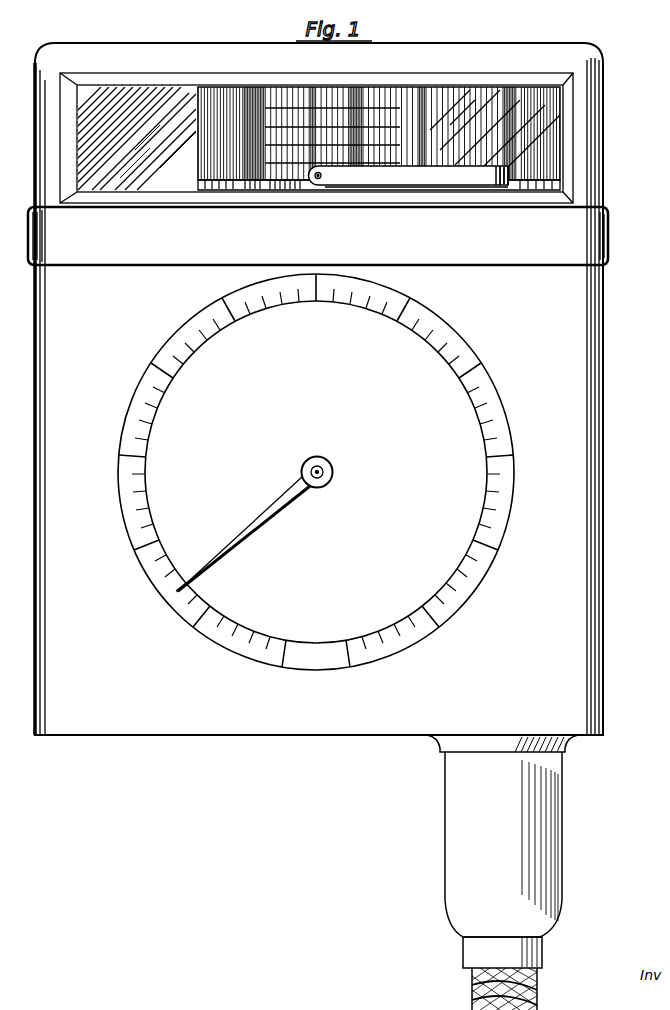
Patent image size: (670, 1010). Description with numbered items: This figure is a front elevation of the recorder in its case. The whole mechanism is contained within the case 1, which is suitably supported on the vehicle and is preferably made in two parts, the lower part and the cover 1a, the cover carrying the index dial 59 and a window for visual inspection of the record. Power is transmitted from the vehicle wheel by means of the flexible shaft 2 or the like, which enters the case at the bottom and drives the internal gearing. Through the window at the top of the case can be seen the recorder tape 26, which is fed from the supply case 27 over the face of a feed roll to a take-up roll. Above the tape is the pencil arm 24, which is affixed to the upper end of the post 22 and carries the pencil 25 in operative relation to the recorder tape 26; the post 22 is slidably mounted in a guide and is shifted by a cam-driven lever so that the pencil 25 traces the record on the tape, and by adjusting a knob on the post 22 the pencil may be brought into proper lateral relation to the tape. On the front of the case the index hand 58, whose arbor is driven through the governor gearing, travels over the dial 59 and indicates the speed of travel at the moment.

The case 1 is at (578, 498).
The cover 1a is at (583, 165).
The flexible shaft 2 is at (537, 980).
The post 22 is at (495, 192).
The pencil arm 24 is at (385, 183).
The pencil 25 is at (310, 186).
The recorder tape 26 is at (296, 95).
The supply case 27 is at (457, 96).
The index hand 58 is at (258, 534).
The dial 59 is at (249, 630).